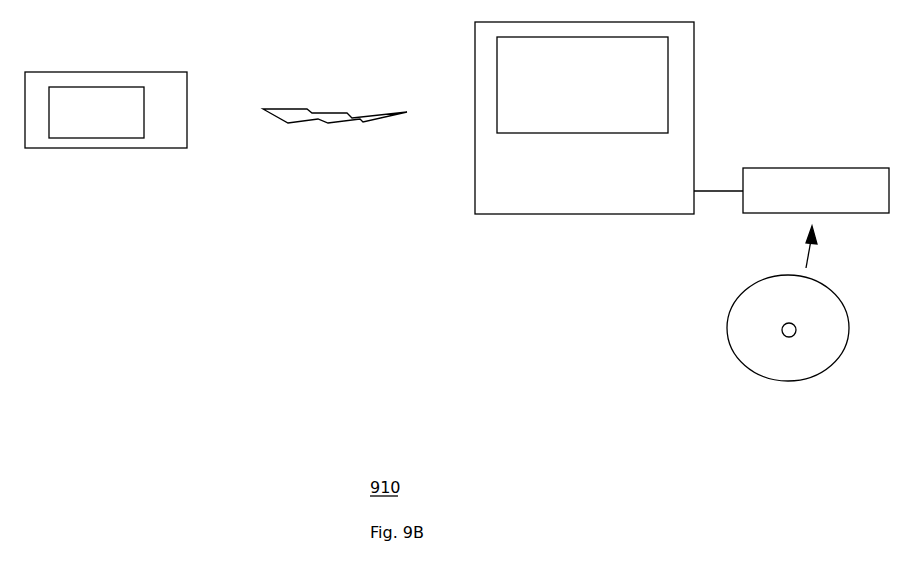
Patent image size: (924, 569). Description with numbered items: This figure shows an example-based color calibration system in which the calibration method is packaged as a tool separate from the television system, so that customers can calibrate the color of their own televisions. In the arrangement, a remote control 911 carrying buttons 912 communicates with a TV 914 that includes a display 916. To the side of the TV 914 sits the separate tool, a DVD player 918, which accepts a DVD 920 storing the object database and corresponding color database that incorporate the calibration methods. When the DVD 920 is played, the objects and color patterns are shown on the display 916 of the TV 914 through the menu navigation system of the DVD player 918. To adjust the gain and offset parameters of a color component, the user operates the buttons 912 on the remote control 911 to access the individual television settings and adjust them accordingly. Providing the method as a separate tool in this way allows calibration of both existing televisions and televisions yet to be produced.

The remote control 911 is at (170, 66).
The buttons 912 is at (80, 84).
The TV 914 is at (475, 152).
The display 916 is at (675, 82).
The DVD player 918 is at (821, 168).
The DVD 920 is at (730, 310).